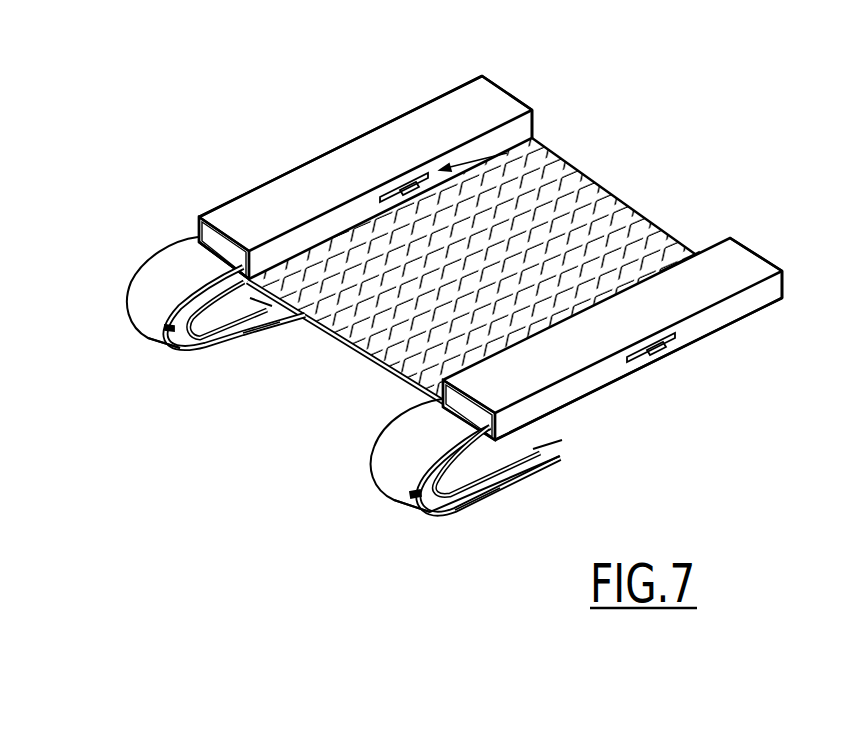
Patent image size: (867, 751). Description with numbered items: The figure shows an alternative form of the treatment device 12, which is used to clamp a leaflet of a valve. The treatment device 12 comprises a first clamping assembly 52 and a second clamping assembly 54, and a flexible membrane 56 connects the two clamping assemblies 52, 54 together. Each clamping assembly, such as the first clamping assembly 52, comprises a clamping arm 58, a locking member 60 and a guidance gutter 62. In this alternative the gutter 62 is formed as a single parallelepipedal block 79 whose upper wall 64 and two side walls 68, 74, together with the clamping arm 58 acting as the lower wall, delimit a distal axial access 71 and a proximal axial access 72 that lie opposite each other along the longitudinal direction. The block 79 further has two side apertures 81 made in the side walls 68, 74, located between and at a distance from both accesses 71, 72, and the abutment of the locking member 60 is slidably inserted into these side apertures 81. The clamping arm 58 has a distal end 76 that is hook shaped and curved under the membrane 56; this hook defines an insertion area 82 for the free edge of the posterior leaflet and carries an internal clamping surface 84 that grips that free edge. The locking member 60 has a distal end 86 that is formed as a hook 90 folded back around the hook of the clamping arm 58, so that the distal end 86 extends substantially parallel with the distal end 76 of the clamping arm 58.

The treatment device 12 is at (353, 104).
The first clamping assembly 52 is at (224, 175).
The second clamping assembly 54 is at (632, 418).
The flexible membrane 56 is at (386, 318).
The clamping arm 58 is at (198, 356).
The locking member 60 is at (153, 353).
The guidance gutter 62 is at (183, 235).
The upper wall 64 is at (437, 110).
The side wall 68 is at (193, 241).
The distal axial access 71 is at (200, 229).
The proximal axial access 72 is at (512, 103).
The side wall 74 is at (524, 124).
The distal end of the clamping arm 76 is at (220, 350).
The parallelepipedal block 79 is at (306, 203).
The side aperture 81 is at (507, 153).
The insertion area 82 is at (232, 312).
The internal clamping surface 84 is at (267, 310).
The distal end of the locking member 86 is at (180, 360).
The hook of the locking member 90 is at (155, 328).